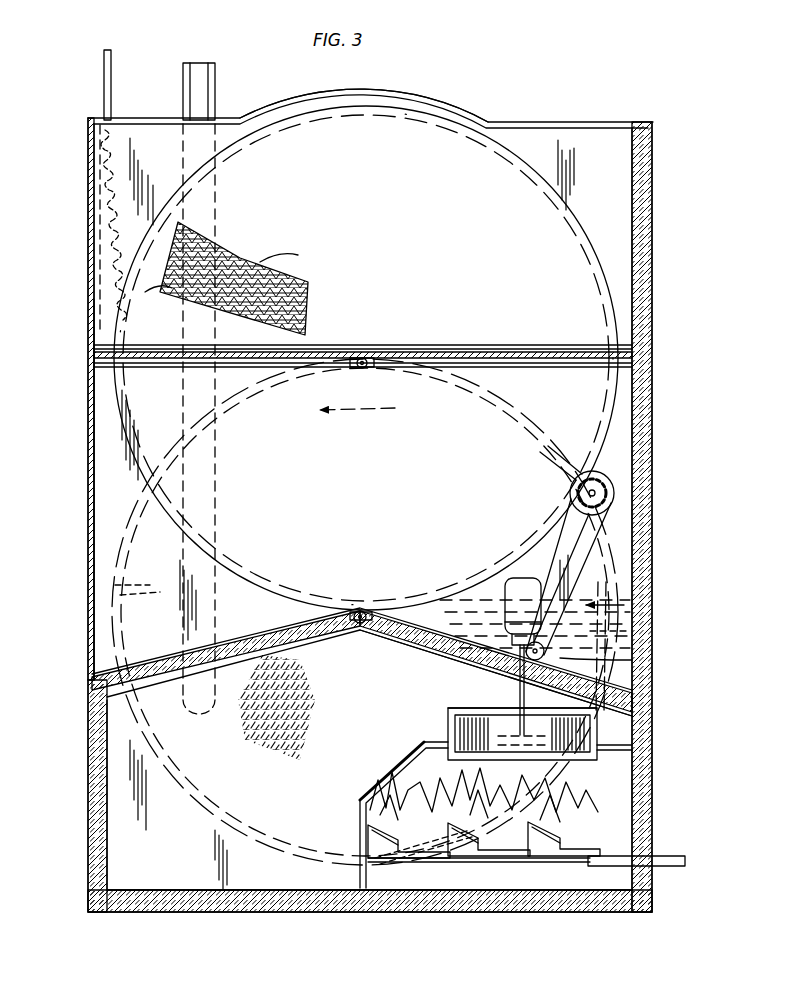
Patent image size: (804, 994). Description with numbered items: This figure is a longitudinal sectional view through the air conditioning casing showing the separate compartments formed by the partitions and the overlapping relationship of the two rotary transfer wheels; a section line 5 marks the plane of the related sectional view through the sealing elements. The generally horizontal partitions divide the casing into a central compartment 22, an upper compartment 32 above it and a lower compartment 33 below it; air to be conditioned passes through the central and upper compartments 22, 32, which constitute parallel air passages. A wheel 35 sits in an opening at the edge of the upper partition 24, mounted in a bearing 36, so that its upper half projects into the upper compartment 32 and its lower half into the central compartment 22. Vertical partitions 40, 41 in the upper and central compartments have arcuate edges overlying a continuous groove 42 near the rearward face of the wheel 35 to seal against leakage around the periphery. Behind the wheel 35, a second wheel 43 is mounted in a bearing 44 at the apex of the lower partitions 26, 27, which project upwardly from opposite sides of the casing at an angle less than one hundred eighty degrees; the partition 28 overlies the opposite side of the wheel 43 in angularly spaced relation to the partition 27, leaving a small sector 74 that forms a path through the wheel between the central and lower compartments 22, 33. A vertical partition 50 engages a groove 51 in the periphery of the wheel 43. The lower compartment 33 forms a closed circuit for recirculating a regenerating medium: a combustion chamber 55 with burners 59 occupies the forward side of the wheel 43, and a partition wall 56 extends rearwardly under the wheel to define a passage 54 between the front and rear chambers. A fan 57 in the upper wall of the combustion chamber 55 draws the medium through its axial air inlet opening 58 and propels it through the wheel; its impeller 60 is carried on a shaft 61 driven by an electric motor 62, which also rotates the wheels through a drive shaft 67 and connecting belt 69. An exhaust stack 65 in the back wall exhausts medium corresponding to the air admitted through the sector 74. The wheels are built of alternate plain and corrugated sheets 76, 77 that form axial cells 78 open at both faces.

The section line 5- 5 is at (606, 657).
The central compartment 22 is at (108, 531).
The upper partition 24 is at (500, 348).
The lower partition 26 is at (260, 643).
The lower partition 27 is at (408, 652).
The lower partition 28 is at (482, 628).
The upper compartment 32 is at (90, 283).
The lower compartment 33 is at (125, 794).
The wheel 35 is at (500, 172).
The bearing 36 is at (363, 370).
The vertical partition 40 is at (556, 145).
The vertical partition 41 is at (93, 406).
The groove 42 is at (455, 128).
The second wheel 43 is at (140, 620).
The bearing 44 is at (359, 610).
The vertical partition 50 is at (125, 850).
The groove 51 is at (195, 800).
The passage 54 is at (440, 892).
The combustion chamber 55 is at (620, 800).
The partition wall 56 is at (388, 866).
The fan 57 is at (448, 708).
The axial air inlet opening 58 is at (460, 786).
The burners 59 is at (545, 866).
The impeller 60 is at (447, 720).
The shaft 61 is at (519, 700).
The electric motor 62 is at (523, 580).
The exhaust stack 65 is at (215, 108).
The drive shaft 67 is at (545, 654).
The connecting belt 69 is at (590, 566).
The sector 74 is at (632, 662).
The plain sheets 76 is at (160, 292).
The corrugated sheets 77 is at (205, 232).
The cells 78 is at (276, 254).